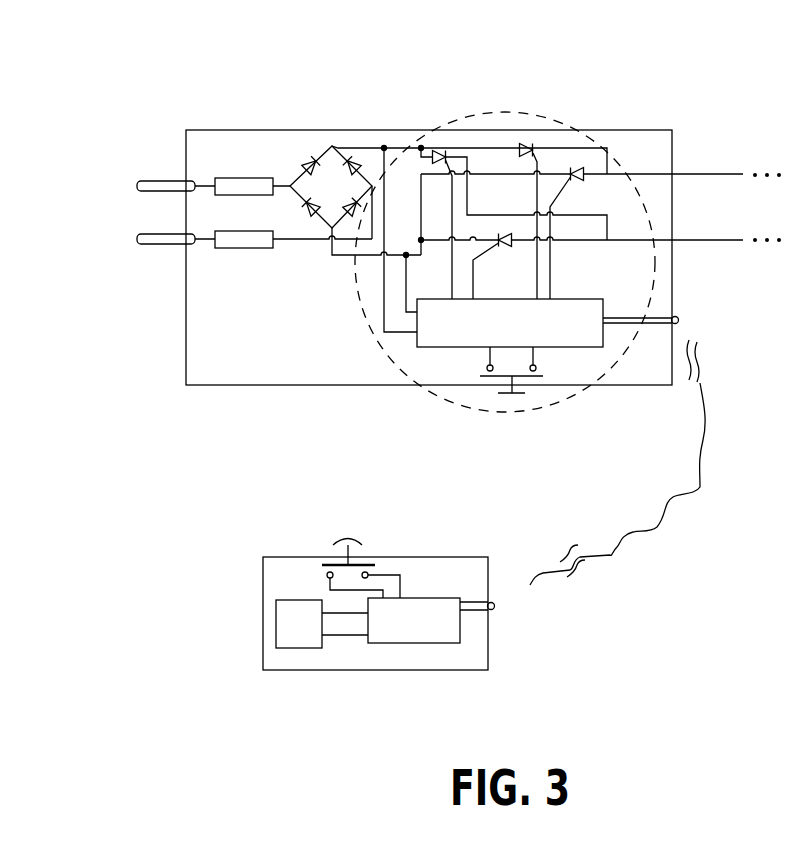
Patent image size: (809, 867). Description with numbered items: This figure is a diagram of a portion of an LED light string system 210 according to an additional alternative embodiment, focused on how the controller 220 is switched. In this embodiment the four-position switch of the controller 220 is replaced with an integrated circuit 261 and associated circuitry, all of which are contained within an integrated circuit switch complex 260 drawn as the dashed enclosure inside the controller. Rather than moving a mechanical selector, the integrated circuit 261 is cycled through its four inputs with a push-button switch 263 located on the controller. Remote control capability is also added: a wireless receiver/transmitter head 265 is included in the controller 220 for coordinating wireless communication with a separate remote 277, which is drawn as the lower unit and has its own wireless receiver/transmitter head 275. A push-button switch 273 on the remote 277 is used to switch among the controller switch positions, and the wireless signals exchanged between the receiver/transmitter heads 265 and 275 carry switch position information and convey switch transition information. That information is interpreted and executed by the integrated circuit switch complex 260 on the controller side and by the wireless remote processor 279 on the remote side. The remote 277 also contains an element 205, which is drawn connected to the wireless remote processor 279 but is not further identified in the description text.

The LED light string system 210 is at (182, 72).
The controller 220 is at (330, 146).
The integrated circuit switch complex 260 is at (588, 130).
The integrated circuit 261 is at (567, 318).
The push-button switch 263 is at (512, 398).
The wireless receiver/transmitter head 265 is at (679, 320).
The push-button switch 273 is at (348, 537).
The power source / battery 205 is at (276, 623).
The wireless receiver/transmitter head 275 is at (494, 608).
The remote 277 is at (360, 673).
The wireless remote processor 279 is at (427, 627).